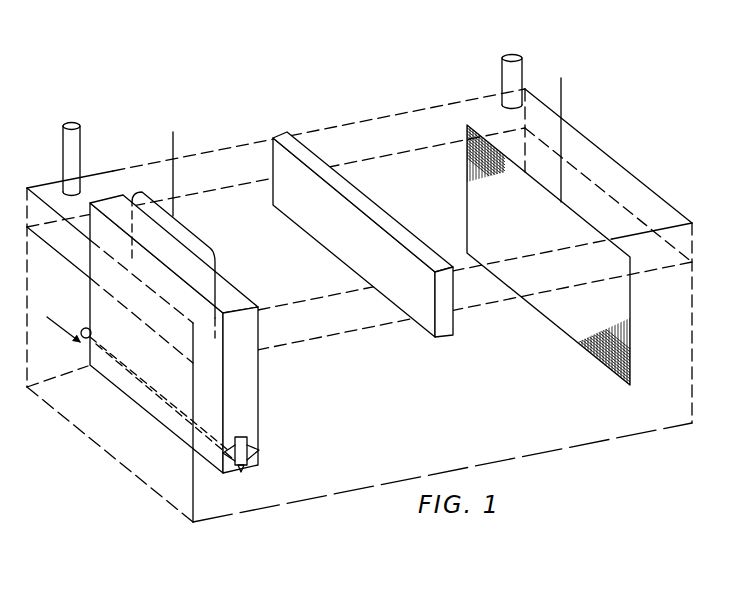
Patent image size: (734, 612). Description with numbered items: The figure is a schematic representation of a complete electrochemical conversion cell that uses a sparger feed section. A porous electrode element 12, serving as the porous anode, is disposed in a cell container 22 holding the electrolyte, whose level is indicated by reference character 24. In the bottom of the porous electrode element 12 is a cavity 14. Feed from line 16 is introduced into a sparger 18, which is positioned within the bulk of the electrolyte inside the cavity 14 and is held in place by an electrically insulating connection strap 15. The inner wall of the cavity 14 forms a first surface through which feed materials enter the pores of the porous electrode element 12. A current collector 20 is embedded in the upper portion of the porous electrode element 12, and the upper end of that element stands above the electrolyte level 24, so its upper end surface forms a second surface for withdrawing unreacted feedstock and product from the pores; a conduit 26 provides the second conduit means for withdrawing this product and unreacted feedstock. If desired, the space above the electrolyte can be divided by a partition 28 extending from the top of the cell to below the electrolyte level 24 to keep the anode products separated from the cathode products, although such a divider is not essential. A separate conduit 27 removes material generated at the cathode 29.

The porous electrode element 12 is at (233, 300).
The cavity 14 is at (248, 467).
The electrically insulating connection strap 15 is at (253, 455).
The feed line 16 is at (90, 328).
The sparger 18 is at (241, 465).
The current collector 20 is at (180, 228).
The cell container 22 is at (653, 192).
The electrolyte level 24 is at (390, 152).
The conduit 26 is at (67, 165).
The conduit 27 is at (508, 81).
The partition 28 is at (402, 228).
The cathode 29 is at (487, 183).